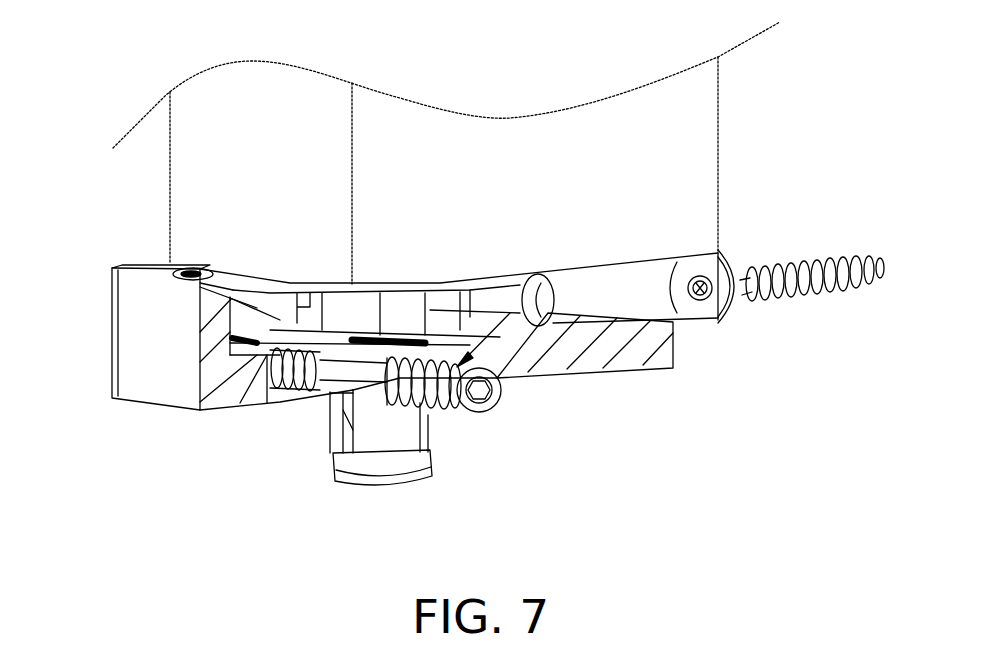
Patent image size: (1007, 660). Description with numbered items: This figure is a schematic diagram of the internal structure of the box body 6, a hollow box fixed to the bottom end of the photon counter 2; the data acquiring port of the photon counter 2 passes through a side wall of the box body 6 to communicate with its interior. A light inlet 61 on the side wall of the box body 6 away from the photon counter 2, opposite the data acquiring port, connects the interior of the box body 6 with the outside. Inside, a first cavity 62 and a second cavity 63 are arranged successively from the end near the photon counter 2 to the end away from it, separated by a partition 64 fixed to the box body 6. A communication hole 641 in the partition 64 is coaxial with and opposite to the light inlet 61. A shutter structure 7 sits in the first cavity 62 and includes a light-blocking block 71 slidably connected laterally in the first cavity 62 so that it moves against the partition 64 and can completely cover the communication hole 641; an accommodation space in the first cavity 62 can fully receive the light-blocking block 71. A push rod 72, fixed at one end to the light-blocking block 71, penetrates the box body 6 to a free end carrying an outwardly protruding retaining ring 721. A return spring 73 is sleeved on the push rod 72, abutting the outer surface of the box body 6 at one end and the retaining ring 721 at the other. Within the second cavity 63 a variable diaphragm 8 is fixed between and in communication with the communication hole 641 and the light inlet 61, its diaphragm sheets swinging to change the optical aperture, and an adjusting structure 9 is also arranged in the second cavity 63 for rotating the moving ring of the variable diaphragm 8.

The photon counter 2 is at (690, 142).
The box body 6 is at (162, 378).
The light inlet 61 is at (400, 437).
The first cavity 62 is at (173, 268).
The second cavity 63 is at (270, 393).
The partition 64 is at (230, 345).
The communication hole 641 is at (230, 297).
The shutter structure 7 is at (790, 242).
The light-blocking block 71 is at (456, 300).
The push rod 72 is at (545, 312).
The retaining ring 721 is at (858, 248).
The return spring 73 is at (803, 287).
The variable diaphragm 8 is at (500, 382).
The adjusting structure 9 is at (496, 419).